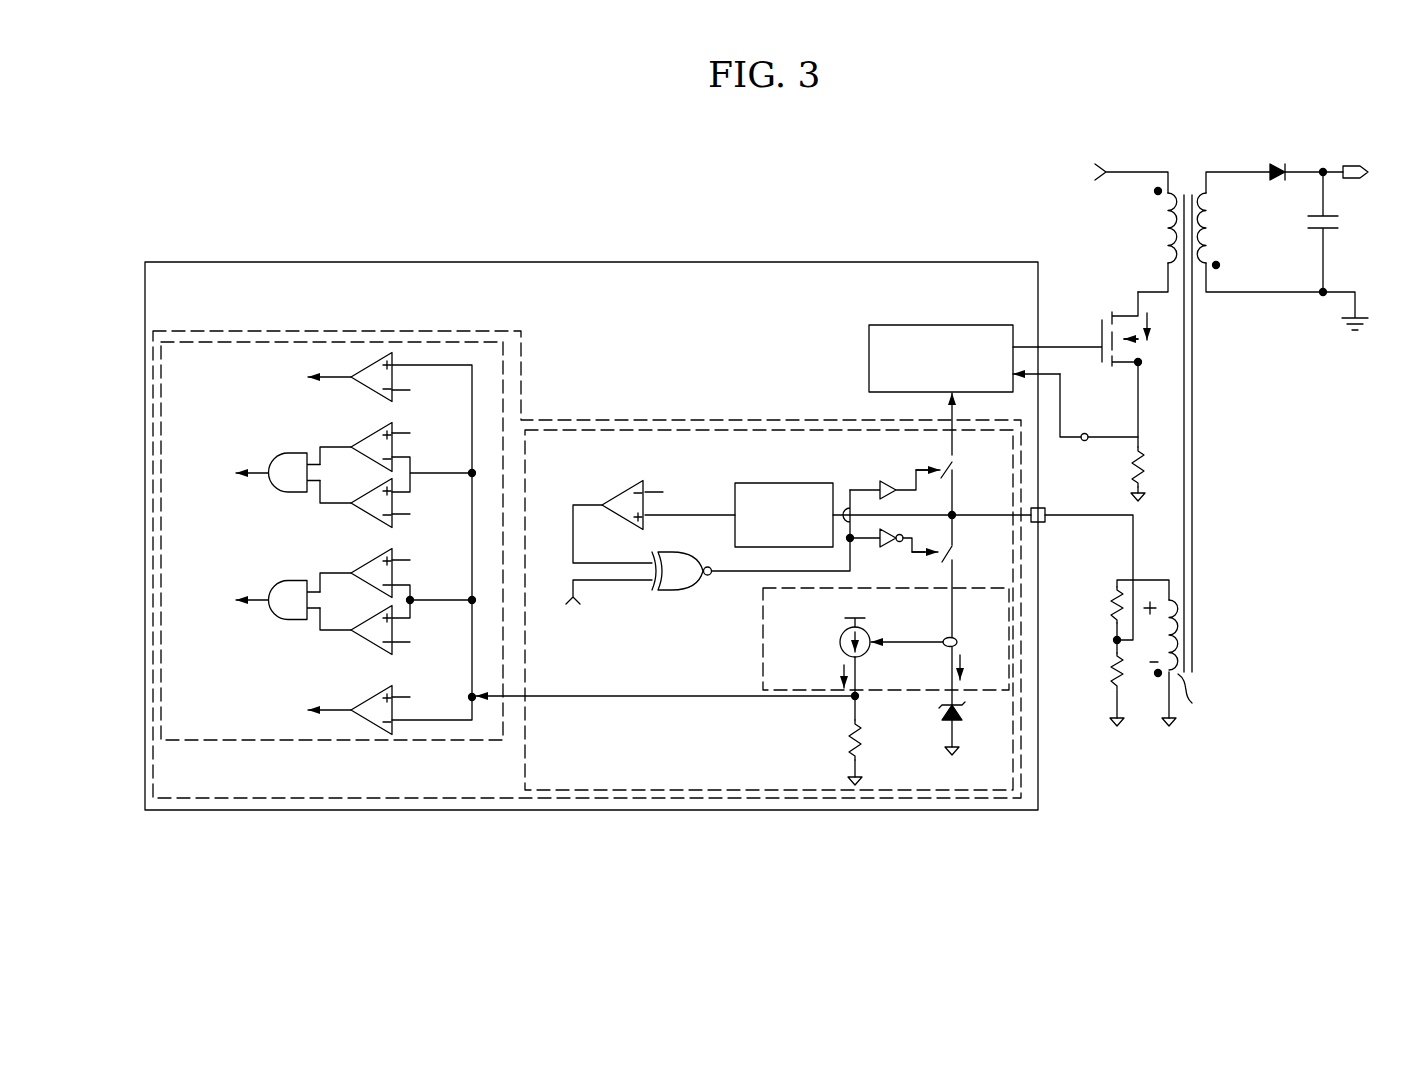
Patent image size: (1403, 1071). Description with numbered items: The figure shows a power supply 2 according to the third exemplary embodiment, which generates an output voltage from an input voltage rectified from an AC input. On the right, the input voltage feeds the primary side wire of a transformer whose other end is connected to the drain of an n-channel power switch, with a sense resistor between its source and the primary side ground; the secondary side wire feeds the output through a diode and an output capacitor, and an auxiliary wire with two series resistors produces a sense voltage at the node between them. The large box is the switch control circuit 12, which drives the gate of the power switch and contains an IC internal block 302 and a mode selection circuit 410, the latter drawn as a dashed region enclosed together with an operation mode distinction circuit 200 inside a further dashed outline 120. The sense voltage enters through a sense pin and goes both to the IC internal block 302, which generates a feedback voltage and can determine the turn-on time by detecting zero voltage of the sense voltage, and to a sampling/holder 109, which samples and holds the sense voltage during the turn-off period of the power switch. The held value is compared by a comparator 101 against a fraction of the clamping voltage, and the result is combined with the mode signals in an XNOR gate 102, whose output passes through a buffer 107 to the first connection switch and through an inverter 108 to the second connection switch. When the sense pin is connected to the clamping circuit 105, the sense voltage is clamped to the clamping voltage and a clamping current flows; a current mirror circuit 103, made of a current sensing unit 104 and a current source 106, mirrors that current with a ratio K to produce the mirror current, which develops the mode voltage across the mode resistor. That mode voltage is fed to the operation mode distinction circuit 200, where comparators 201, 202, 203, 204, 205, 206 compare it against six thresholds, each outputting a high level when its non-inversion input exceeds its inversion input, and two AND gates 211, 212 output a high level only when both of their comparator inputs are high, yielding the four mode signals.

The power supply 2 is at (252, 226).
The switch control circuit 12 is at (838, 262).
The IC internal block 302 is at (968, 325).
The clamping voltage compensation circuit 120 is at (521, 768).
The operation mode distinction circuit 200 is at (332, 742).
The comparator 201 is at (367, 698).
The comparator 202 is at (365, 639).
The comparator 203 is at (367, 563).
The comparator 204 is at (367, 513).
The comparator 205 is at (368, 432).
The comparator 206 is at (363, 386).
The AND gate 211 is at (273, 620).
The AND gate 212 is at (273, 492).
The mode selection circuit 410 is at (700, 420).
The comparator 101 is at (625, 486).
The XNOR gate 102 is at (687, 590).
The current mirror circuit 103 is at (763, 650).
The current sensing unit 104 is at (988, 625).
The clamping circuit 105 is at (960, 721).
The current source 106 is at (840, 644).
The buffer 107 is at (880, 470).
The inverter 108 is at (882, 548).
The sampling/holder 109 is at (771, 483).